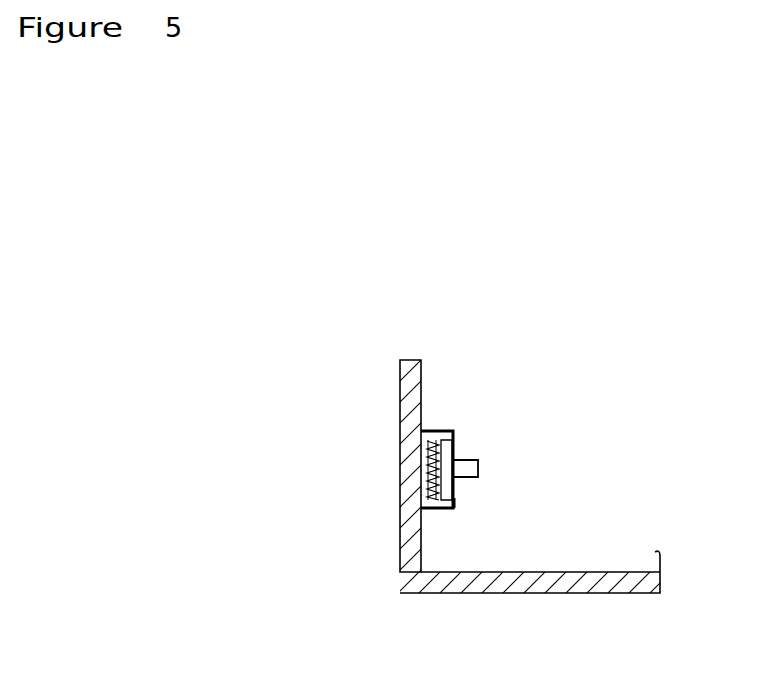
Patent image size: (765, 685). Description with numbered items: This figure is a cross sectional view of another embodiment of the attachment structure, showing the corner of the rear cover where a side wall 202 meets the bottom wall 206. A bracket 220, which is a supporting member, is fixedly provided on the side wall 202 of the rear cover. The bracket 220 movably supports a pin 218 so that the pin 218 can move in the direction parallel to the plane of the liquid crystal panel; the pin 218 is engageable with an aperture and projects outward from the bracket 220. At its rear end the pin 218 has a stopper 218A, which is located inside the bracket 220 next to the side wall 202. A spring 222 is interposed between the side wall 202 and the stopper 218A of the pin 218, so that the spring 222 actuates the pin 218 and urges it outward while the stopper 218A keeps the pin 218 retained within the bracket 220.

The side wall 202 is at (400, 395).
The bottom wall 206 is at (550, 593).
The pin 218 is at (478, 467).
The stopper 218A is at (455, 505).
The bracket 220 is at (438, 430).
The spring 222 is at (420, 480).